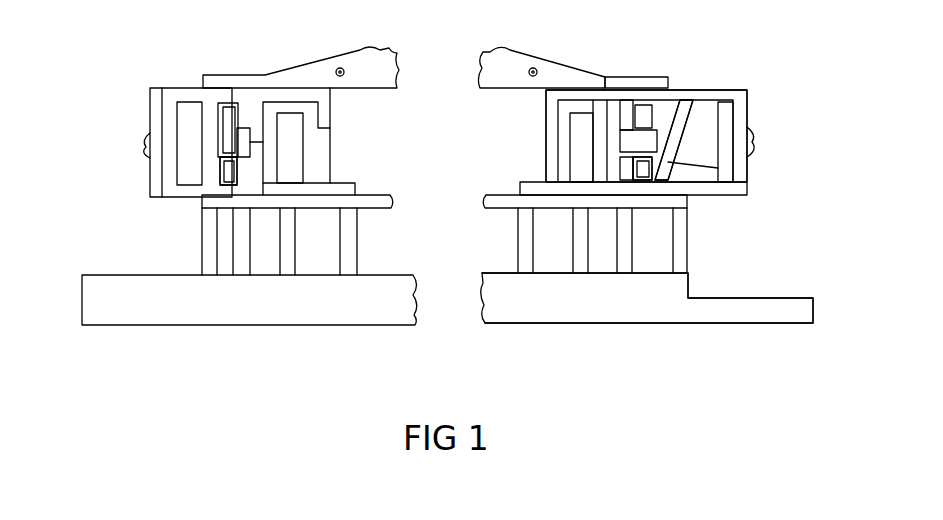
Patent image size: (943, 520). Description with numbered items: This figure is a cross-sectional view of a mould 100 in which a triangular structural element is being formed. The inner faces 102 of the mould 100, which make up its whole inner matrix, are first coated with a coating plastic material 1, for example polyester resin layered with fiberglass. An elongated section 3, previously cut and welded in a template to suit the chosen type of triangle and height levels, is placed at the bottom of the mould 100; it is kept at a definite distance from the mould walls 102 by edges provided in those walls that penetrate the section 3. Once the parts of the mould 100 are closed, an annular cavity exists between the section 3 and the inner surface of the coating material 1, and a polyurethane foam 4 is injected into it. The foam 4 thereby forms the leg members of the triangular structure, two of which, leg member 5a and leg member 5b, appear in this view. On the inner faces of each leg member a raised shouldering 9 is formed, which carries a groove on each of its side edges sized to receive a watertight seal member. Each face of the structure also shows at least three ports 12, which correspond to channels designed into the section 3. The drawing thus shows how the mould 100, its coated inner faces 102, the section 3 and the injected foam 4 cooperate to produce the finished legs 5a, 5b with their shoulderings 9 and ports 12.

The coating plastic material 1 is at (673, 102).
The elongated section 3 is at (237, 140).
The polyurethane foam 4 is at (665, 115).
The leg member 5a is at (680, 123).
The leg member 5b is at (221, 188).
The raised shouldering 9 is at (630, 143).
The ports 12 is at (653, 162).
The mould 100 is at (702, 313).
The inner faces of the mould 102 is at (210, 106).